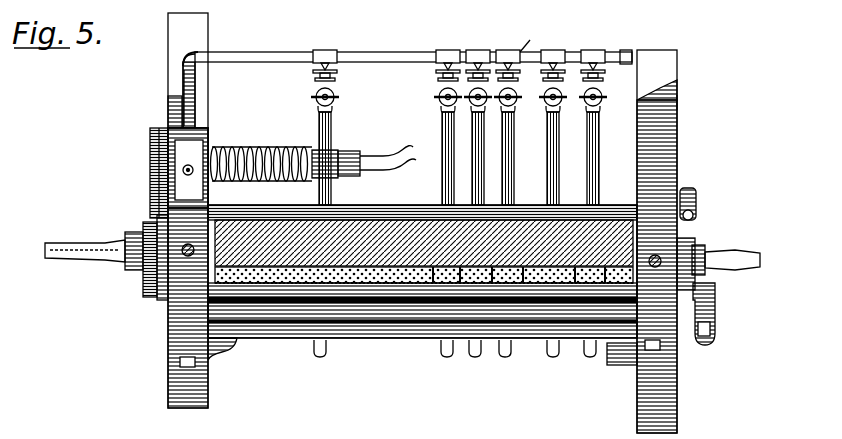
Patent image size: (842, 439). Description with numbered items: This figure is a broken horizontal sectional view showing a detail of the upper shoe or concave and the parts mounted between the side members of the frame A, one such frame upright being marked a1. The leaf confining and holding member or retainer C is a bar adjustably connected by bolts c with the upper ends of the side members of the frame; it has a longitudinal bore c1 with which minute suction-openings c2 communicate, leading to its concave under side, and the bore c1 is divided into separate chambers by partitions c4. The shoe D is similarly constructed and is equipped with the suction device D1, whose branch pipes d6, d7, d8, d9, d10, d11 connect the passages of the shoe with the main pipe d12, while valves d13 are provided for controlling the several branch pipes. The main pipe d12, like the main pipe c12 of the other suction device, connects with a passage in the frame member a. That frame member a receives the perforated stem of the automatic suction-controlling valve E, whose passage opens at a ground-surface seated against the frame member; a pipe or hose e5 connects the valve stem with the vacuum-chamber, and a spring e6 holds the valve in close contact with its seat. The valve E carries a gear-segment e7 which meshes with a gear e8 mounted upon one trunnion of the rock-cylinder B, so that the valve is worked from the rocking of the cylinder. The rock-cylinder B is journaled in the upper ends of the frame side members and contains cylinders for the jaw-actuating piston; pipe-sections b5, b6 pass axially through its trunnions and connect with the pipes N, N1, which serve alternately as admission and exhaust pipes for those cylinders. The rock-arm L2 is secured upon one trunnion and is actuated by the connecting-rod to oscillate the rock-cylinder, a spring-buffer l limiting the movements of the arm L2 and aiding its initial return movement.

The frame A is at (677, 402).
The frame member a is at (168, 62).
The frame upright a1 is at (677, 102).
The valves d13 is at (343, 82).
The suction device D1 is at (522, 33).
The branch pipe d6 is at (333, 123).
The branch pipe d7 is at (443, 138).
The branch pipe d8 is at (483, 160).
The branch pipe d9 is at (519, 137).
The branch pipe d10 is at (516, 173).
The branch pipe d11 is at (605, 147).
The spring e6 is at (262, 150).
The pipe or hose e5 is at (385, 160).
The suction-controlling valve E is at (142, 200).
The gear-segment e7 is at (150, 145).
The main pipe c12 is at (190, 165).
The main pipe d12 is at (195, 113).
The bolts c is at (420, 246).
The gear e8 is at (155, 292).
The pipe-section b5 is at (115, 246).
The pipe N is at (48, 258).
The concave or shoe D is at (390, 330).
The longitudinal bore c1 is at (390, 262).
The concave or shoe C is at (598, 253).
The suction-openings c2 is at (368, 270).
The partitions c4 is at (546, 287).
The rock-cylinder B is at (295, 303).
The spring-buffer l is at (700, 213).
The pipe-section b6 is at (717, 255).
The pipe N1 is at (733, 303).
The rock-arm L2 is at (700, 300).